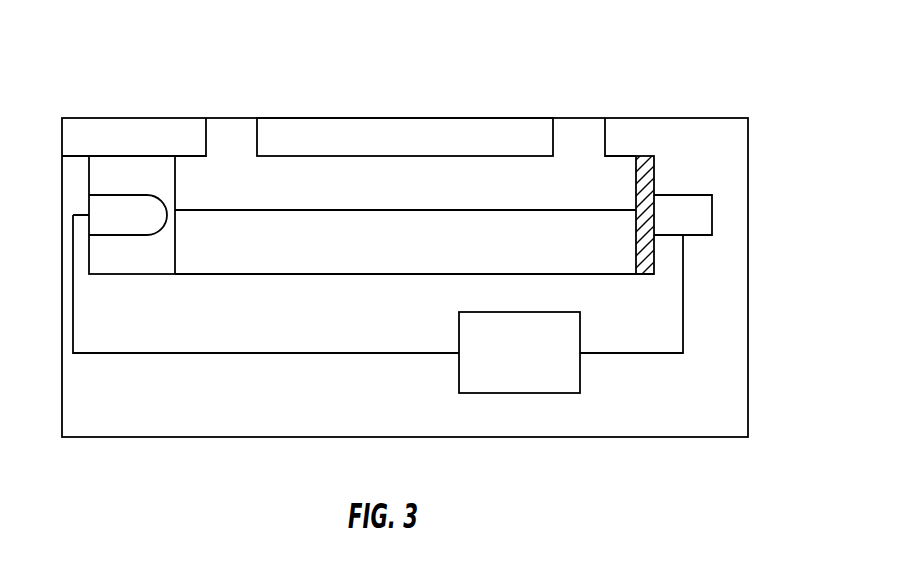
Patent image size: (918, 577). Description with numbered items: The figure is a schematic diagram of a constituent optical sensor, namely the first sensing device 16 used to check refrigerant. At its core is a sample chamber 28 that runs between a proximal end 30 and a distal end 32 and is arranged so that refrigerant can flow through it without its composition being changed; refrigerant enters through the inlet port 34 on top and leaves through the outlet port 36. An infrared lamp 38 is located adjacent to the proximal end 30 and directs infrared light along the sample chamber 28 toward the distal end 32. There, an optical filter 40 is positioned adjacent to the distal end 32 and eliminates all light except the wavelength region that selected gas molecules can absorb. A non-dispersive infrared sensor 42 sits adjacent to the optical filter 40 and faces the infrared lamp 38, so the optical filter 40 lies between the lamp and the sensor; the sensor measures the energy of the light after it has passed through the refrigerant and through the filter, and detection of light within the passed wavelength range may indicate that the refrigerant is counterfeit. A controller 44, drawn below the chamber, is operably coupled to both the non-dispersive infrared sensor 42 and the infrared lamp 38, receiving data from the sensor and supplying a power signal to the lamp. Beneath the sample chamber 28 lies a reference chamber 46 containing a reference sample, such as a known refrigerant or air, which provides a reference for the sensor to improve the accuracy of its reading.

The first sensing device 16 is at (723, 72).
The sample chamber 28 is at (404, 198).
The proximal end 30 is at (175, 260).
The distal end 32 is at (636, 230).
The inlet port 34 is at (231, 120).
The outlet port 36 is at (580, 120).
The infrared lamp 38 is at (163, 206).
The optical filter 40 is at (645, 156).
The non-dispersive infrared sensor 42 is at (668, 195).
The controller 44 is at (531, 363).
The reference chamber 46 is at (404, 263).